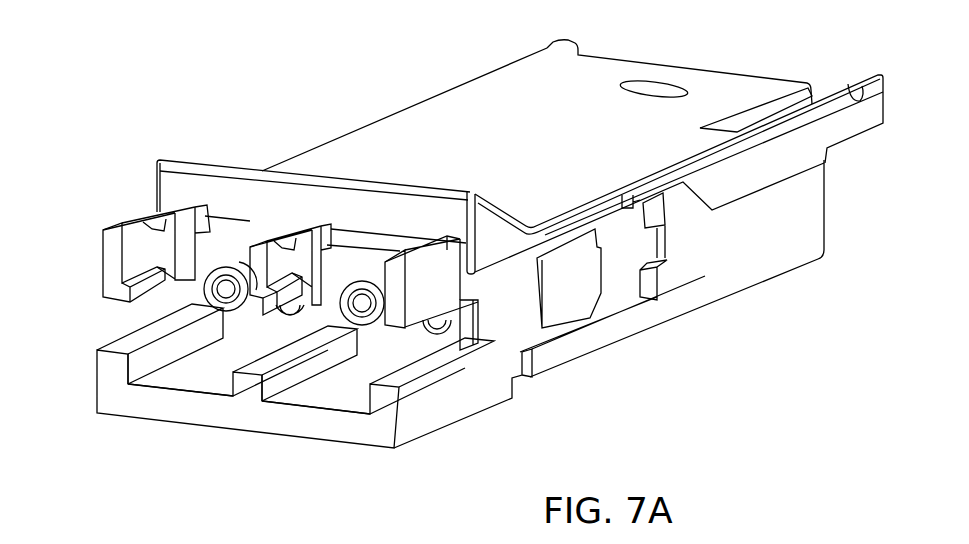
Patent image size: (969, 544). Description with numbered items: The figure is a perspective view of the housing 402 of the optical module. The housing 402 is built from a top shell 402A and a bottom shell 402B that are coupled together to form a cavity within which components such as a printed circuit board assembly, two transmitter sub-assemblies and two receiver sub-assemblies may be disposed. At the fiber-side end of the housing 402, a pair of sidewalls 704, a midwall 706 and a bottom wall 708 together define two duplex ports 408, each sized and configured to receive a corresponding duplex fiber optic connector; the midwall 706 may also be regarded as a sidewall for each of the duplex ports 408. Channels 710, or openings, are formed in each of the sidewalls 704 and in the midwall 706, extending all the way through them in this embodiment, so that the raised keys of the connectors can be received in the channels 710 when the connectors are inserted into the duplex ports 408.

The housing 402 is at (301, 45).
The top shell 402A is at (732, 175).
The bottom shell 402B is at (688, 309).
The sidewalls 704 is at (103, 262).
The midwall 706 is at (303, 350).
The bottom wall 708 is at (243, 430).
The channels 710 is at (120, 313).
The duplex ports 408 is at (188, 367).